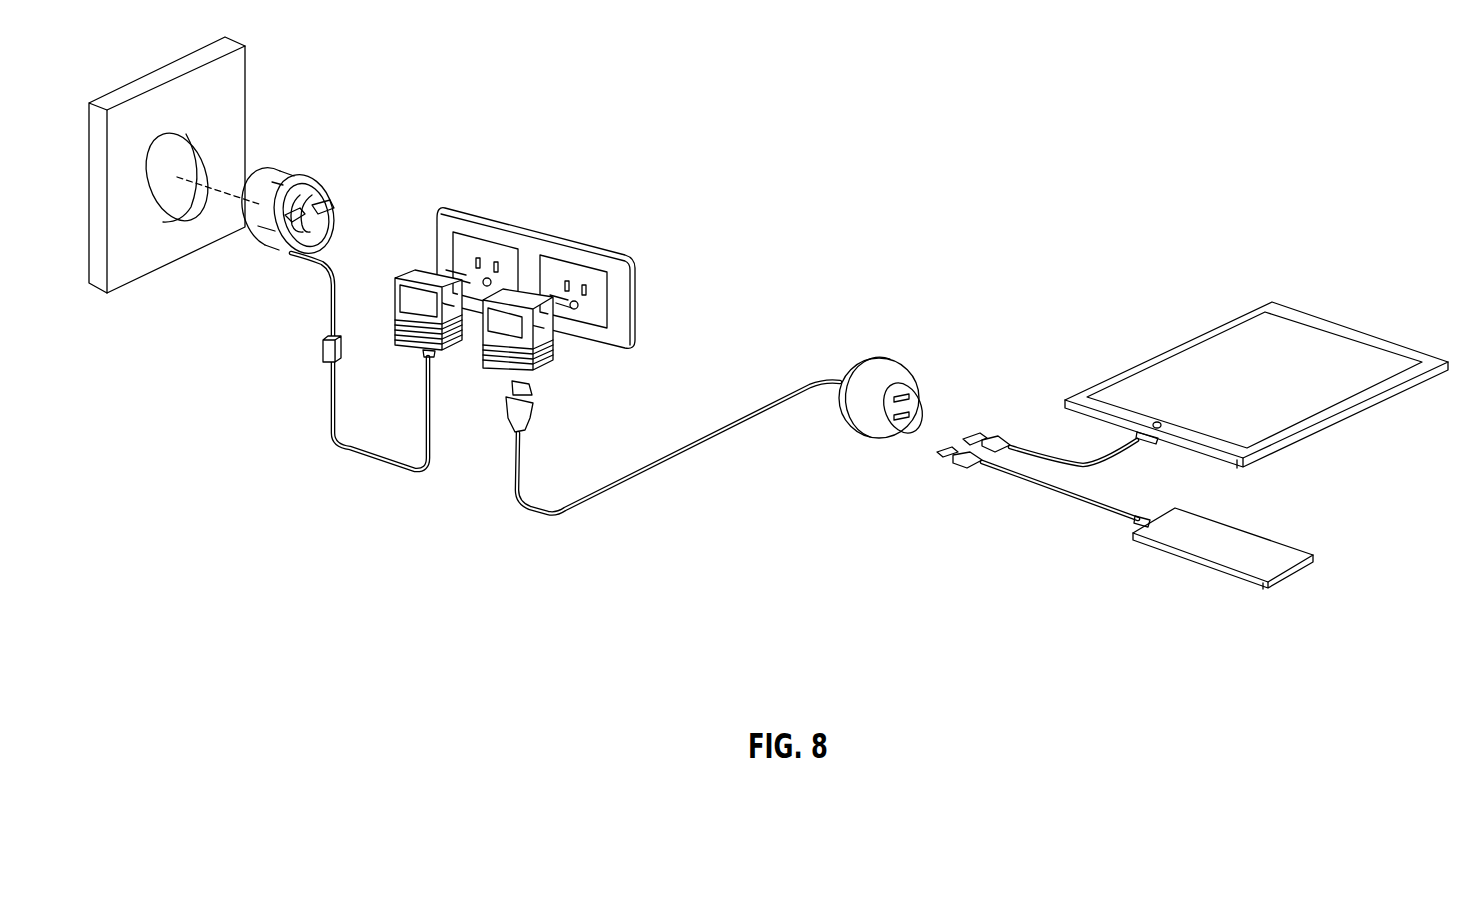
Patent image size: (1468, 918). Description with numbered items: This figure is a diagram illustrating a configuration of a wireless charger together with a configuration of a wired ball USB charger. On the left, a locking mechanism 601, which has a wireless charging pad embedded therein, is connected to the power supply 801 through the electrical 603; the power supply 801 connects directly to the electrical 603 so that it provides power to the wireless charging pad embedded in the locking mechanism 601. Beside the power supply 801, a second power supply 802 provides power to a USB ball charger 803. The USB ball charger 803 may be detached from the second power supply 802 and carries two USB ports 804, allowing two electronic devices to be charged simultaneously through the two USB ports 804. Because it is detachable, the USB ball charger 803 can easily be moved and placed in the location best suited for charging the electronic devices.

The locking mechanism 601 is at (298, 170).
The electrical 603 is at (322, 350).
The power supply 801 is at (418, 262).
The second power supply 802 is at (527, 288).
The USB ball charger 803 is at (882, 358).
The USB ports 804 is at (927, 422).